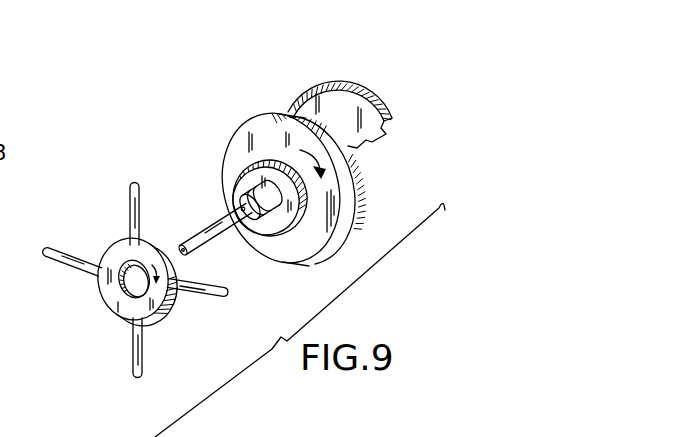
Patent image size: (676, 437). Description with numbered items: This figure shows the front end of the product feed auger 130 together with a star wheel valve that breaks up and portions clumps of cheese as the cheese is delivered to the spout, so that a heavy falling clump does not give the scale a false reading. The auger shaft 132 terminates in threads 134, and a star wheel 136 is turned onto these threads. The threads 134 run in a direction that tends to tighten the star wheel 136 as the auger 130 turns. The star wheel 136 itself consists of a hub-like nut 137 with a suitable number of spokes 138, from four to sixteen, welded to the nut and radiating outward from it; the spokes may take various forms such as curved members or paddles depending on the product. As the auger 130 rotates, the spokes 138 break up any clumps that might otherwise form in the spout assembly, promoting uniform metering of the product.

The auger 130 is at (340, 81).
The auger shaft 132 is at (220, 240).
The threads 134 is at (267, 238).
The star wheel 136 is at (126, 267).
The hub-like nut 137 is at (118, 298).
The spokes 138 is at (65, 264).